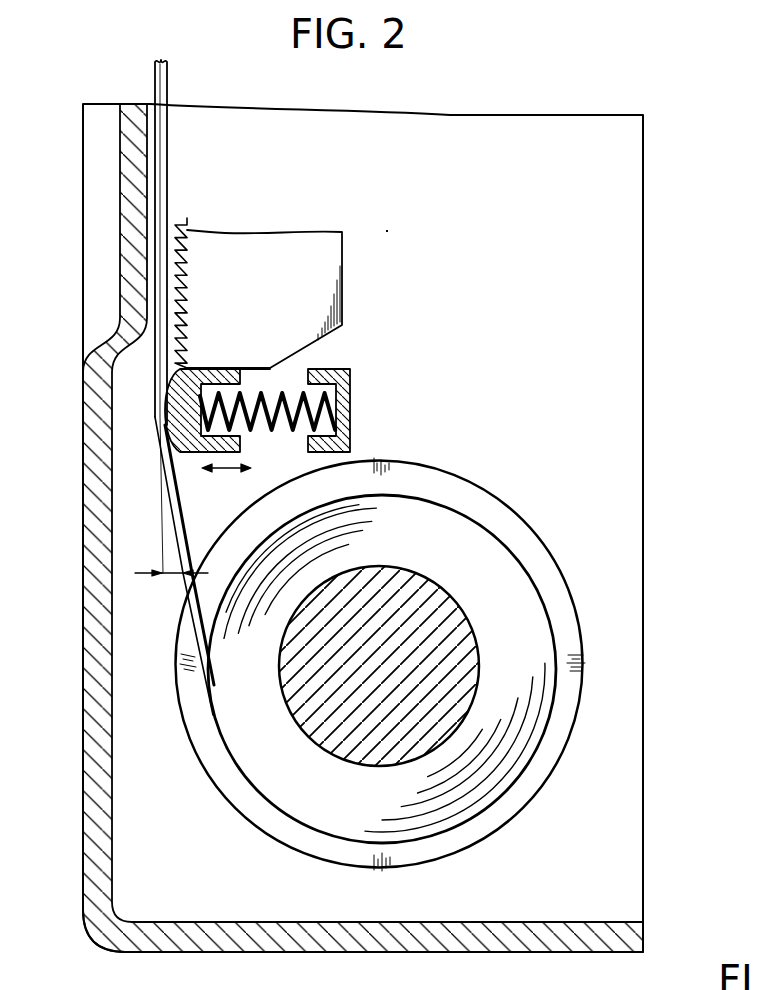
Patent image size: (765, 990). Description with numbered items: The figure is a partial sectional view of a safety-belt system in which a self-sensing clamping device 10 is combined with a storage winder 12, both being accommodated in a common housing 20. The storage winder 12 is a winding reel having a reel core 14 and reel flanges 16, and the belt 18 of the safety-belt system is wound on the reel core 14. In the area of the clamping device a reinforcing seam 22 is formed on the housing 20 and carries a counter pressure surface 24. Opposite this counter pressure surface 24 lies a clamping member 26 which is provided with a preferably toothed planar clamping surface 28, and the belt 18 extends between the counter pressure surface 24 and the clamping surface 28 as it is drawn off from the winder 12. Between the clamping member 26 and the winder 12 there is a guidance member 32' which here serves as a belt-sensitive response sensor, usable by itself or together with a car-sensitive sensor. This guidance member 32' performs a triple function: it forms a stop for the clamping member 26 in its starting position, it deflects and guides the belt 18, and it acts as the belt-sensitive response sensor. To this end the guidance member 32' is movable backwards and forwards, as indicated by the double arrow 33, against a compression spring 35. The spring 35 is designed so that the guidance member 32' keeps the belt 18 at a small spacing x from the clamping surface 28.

The self-sensing clamping device 10 is at (346, 266).
The storage winder 12 is at (508, 498).
The reel core 14 is at (458, 647).
The reel flanges 16 is at (537, 553).
The belt 18 is at (162, 83).
The housing 20 is at (90, 735).
The reinforcing seam 22 is at (120, 197).
The counter pressure surface 24 is at (152, 146).
The clamping member 26 is at (344, 318).
The clamping surface 28 is at (184, 234).
The guidance member 32' is at (167, 566).
The double arrow 33 is at (225, 470).
The compression spring 35 is at (258, 425).
The spacing x is at (160, 576).